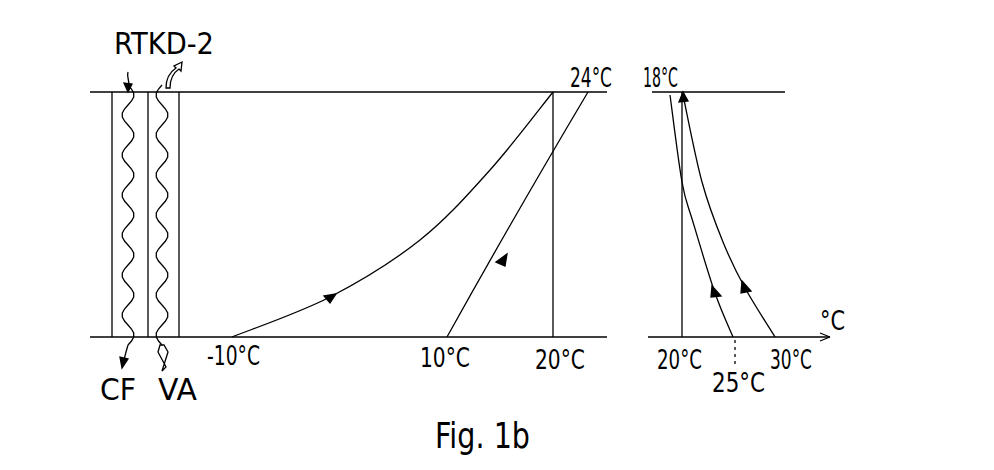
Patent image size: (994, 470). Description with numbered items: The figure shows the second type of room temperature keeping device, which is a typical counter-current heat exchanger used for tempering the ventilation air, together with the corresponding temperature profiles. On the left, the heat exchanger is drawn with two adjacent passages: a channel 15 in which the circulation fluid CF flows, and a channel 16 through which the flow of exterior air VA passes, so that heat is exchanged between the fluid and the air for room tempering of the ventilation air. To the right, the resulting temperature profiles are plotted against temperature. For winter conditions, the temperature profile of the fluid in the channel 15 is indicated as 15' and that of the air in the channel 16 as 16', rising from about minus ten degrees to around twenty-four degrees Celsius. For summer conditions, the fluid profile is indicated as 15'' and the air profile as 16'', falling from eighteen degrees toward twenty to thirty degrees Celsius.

The channel 15 is at (101, 220).
The channel 16 is at (190, 216).
The temperature profile 15' is at (517, 214).
The temperature profile 16' is at (392, 214).
The temperature profile 15'' is at (683, 216).
The temperature profile 16'' is at (734, 214).